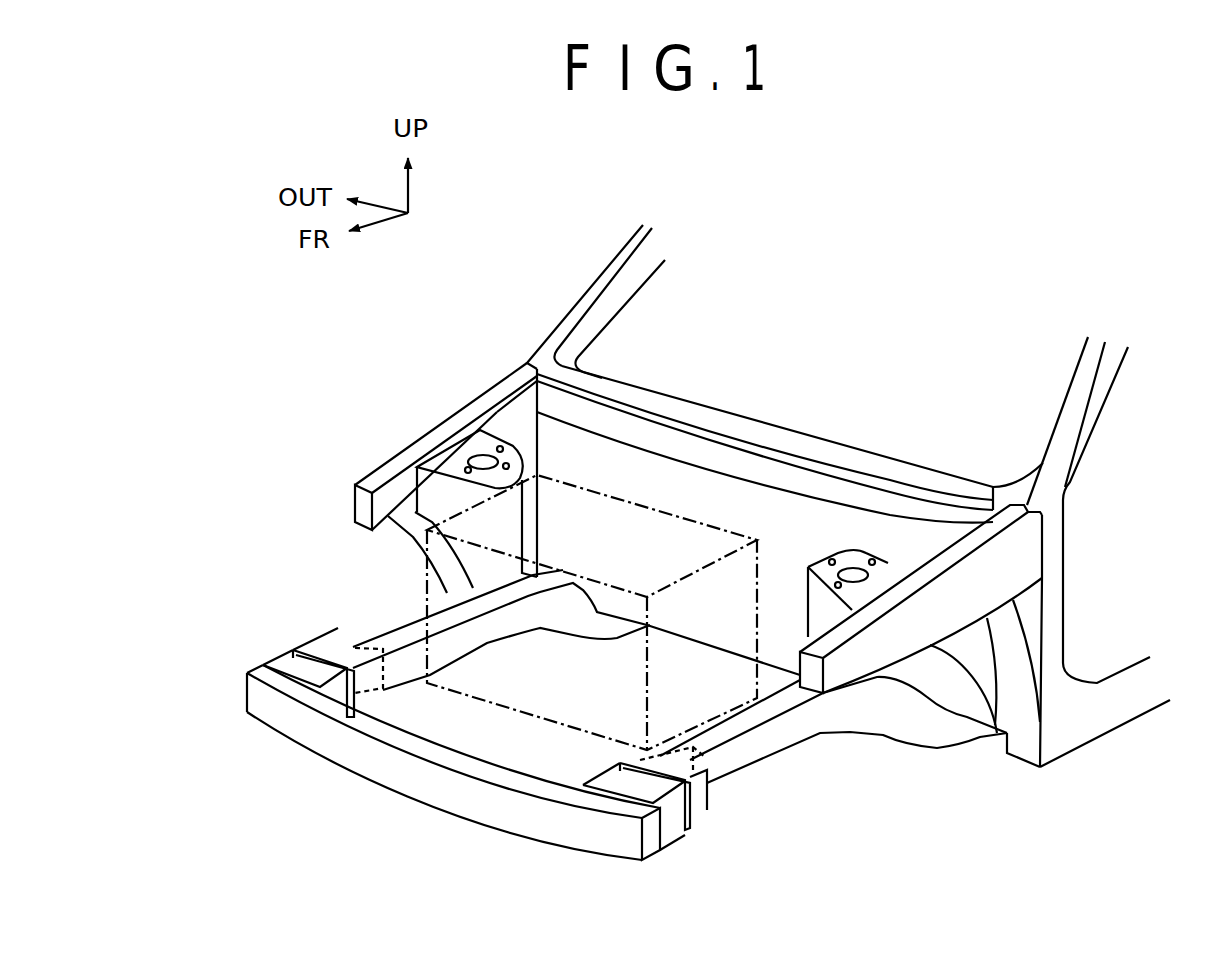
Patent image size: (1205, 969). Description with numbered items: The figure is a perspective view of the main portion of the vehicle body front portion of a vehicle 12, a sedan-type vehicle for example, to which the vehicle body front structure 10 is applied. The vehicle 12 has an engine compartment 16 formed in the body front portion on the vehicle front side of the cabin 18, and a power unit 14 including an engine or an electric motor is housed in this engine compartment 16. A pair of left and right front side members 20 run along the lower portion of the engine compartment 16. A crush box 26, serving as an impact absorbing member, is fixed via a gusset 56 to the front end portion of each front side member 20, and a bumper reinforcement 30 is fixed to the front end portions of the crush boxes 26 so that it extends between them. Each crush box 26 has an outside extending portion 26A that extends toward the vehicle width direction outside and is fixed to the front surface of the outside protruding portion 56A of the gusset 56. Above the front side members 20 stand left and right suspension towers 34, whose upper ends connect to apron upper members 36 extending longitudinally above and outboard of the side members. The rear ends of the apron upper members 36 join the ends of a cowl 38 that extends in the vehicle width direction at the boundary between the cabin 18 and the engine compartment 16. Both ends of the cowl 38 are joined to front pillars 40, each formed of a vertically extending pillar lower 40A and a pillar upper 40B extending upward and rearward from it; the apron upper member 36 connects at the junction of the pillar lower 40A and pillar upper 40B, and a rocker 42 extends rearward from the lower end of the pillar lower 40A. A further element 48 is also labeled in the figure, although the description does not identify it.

The vehicle body front structure 10 is at (236, 468).
The vehicle 12 is at (559, 263).
The power unit 14 is at (627, 503).
The engine compartment 16 is at (570, 686).
The cabin 18 is at (918, 318).
The front side member 20 is at (408, 623).
The crush box 26 is at (262, 672).
The outside extending portion 26A is at (298, 676).
The bumper reinforcement 30 is at (425, 797).
The suspension tower 34 is at (443, 458).
The apron upper member 36 is at (470, 410).
The cowl 38 is at (732, 425).
The front pillar 40 is at (612, 249).
The pillar lower 40A is at (1063, 618).
The pillar upper 40B is at (622, 309).
The rocker 42 is at (1125, 718).
The cowl lower flange 48 is at (771, 512).
The gusset 56 is at (371, 643).
The outside protruding portion 56A is at (327, 648).